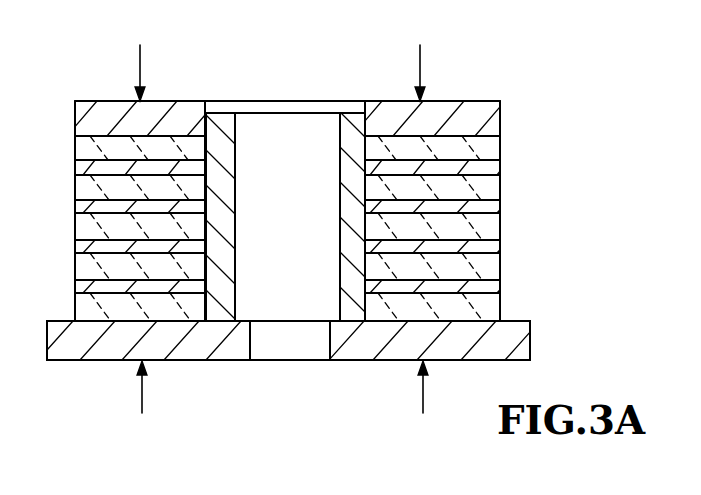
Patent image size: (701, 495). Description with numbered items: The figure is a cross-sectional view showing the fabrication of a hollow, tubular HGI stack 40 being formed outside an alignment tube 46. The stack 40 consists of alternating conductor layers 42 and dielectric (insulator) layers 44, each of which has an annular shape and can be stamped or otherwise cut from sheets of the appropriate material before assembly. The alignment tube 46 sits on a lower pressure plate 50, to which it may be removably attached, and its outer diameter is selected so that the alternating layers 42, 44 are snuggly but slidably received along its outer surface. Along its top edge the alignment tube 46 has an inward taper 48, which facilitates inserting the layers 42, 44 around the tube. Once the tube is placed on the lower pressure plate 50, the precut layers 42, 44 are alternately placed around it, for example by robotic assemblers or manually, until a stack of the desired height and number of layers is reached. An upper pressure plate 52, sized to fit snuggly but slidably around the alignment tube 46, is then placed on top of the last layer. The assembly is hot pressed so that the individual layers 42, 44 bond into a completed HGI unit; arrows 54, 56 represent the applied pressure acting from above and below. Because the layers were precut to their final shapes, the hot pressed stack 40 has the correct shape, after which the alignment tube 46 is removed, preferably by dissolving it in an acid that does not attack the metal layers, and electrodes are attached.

The HGI stack 40 is at (288, 233).
The conductor layers 42 is at (498, 168).
The dielectric layers 44 is at (82, 150).
The alignment tube 46 is at (237, 228).
The inward taper 48 is at (198, 101).
The lower pressure plate 50 is at (68, 362).
The upper pressure plate 52 is at (113, 101).
The arrows 54 is at (141, 62).
The arrows 56 is at (141, 396).